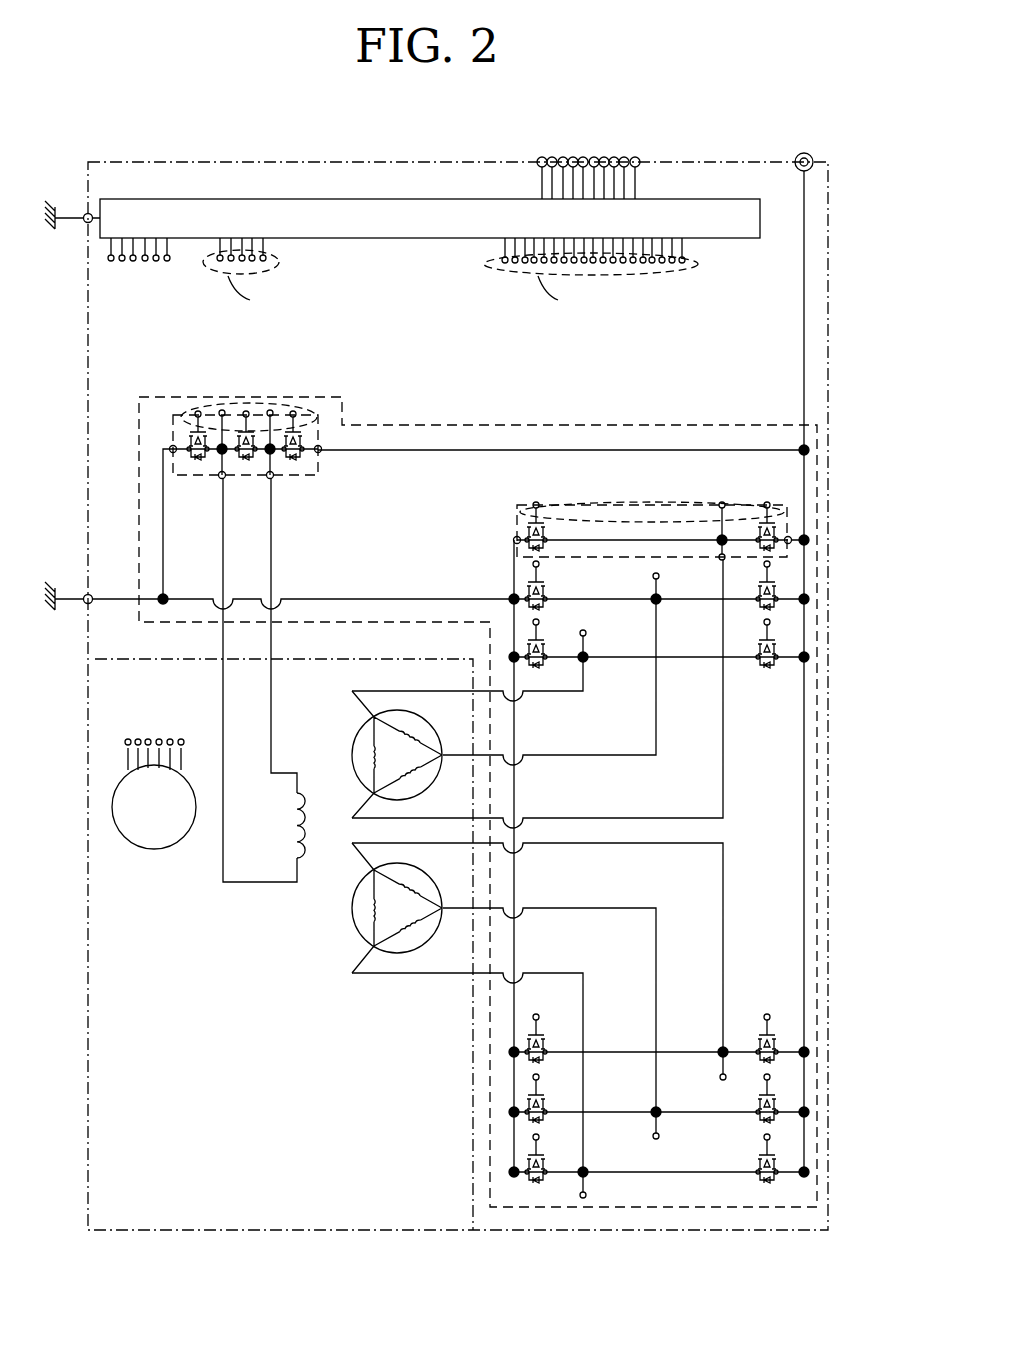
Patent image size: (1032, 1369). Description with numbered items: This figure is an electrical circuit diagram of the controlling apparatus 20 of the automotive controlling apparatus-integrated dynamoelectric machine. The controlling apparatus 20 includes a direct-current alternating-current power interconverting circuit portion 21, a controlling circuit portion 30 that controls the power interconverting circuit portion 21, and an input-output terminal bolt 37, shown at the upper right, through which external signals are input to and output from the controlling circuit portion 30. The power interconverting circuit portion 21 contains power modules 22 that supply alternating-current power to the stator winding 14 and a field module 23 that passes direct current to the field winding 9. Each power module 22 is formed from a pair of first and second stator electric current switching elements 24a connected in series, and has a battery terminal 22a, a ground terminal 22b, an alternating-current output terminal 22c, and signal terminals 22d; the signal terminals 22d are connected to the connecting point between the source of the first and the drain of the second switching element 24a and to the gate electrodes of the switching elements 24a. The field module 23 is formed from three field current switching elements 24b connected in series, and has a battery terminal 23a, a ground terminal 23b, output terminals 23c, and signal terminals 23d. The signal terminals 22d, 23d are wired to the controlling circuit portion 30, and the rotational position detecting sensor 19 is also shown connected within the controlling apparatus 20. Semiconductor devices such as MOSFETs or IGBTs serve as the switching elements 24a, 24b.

The field winding 9 is at (283, 828).
The stator winding 14 is at (346, 750).
The rotational position detecting sensor 19 is at (150, 851).
The controlling apparatus 20 is at (828, 218).
The direct-current alternating-current power interconverting circuit portion 21 is at (818, 425).
The power module 22 is at (515, 517).
The battery terminal 22a is at (791, 538).
The ground terminal 22b is at (514, 540).
The alternating-current output terminal 22c is at (721, 560).
The signal terminal 22d is at (537, 502).
The field module 23 is at (320, 476).
The battery terminal 23a is at (322, 452).
The ground terminal 23b is at (172, 447).
The output terminal 23c is at (272, 479).
The signal terminal 23d is at (196, 410).
The stator electric current switching element 24a is at (522, 554).
The field current switching element 24b is at (198, 464).
The controlling circuit portion 30 is at (415, 232).
The input-output terminal bolt 37 is at (805, 153).